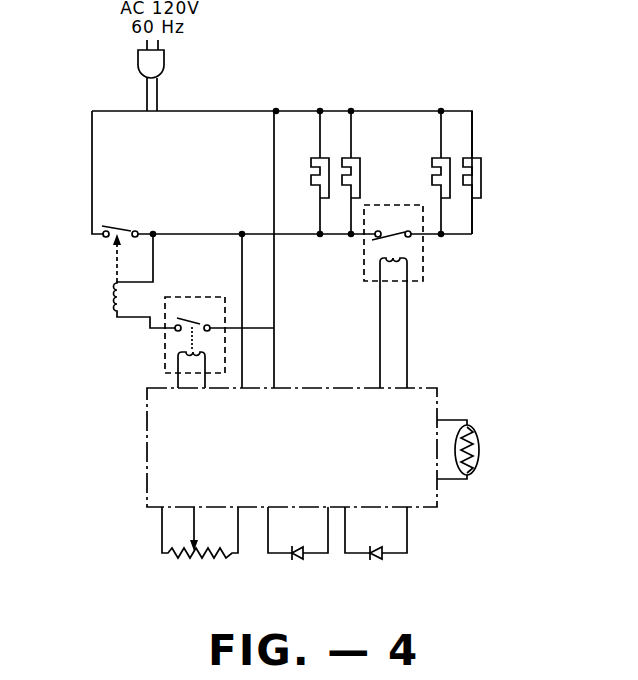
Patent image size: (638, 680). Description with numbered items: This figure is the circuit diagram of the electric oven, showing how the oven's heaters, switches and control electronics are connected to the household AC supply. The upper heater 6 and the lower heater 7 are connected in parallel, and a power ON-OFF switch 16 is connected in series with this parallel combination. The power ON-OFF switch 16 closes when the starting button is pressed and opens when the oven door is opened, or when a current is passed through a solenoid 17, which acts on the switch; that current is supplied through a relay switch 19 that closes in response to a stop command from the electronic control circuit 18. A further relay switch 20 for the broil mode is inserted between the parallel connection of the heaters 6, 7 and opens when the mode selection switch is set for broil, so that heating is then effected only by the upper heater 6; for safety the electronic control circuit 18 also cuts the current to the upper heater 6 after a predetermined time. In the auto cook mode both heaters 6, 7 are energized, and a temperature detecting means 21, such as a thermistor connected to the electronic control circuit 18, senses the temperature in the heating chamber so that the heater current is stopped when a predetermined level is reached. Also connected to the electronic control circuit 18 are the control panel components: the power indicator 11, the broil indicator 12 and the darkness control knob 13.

The upper heater 6 is at (357, 175).
The lower heater 7 is at (480, 173).
The power indicator 11 is at (297, 560).
The broil indicator 12 is at (377, 560).
The darkness control knob 13 is at (199, 562).
The power ON-OFF switch 16 is at (131, 227).
The solenoid 17 is at (115, 296).
The electronic control circuit 18 is at (157, 427).
The relay switch 19 is at (193, 320).
The relay switch for broil mode 20 is at (390, 233).
The temperature detecting means 21 is at (476, 441).